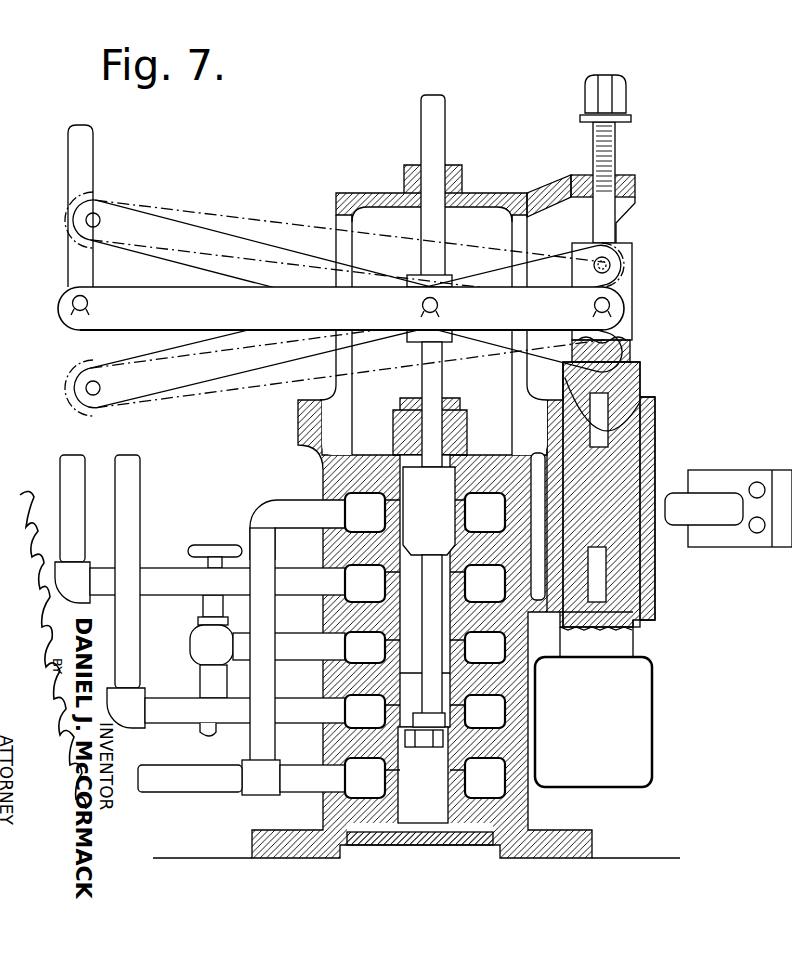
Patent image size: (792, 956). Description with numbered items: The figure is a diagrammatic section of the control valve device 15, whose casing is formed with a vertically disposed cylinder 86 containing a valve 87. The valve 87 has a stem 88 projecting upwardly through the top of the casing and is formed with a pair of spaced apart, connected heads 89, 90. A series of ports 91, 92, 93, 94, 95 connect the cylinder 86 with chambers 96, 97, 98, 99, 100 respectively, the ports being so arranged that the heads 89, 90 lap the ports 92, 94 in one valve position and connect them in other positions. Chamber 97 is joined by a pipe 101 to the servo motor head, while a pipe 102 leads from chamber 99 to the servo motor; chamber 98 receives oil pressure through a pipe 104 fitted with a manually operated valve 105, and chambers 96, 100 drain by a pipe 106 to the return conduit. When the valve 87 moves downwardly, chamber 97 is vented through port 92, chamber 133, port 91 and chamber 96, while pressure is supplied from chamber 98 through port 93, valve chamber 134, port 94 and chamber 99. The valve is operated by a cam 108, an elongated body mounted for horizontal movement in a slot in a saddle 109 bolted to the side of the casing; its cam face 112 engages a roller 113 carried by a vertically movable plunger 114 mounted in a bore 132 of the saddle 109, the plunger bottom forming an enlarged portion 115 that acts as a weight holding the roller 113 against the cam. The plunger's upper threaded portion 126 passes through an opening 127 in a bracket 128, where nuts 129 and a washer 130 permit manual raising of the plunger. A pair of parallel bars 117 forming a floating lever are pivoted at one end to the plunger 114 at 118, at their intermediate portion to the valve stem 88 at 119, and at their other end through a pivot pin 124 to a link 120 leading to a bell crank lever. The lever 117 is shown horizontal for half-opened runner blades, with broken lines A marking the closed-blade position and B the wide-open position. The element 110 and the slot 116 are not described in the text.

The control valve device 15 is at (530, 810).
The cylinder 86 is at (466, 681).
The valve 87 is at (410, 673).
The valve stem 88 is at (421, 131).
The head 89 is at (410, 573).
The head 90 is at (400, 728).
The port 91 is at (485, 512).
The port 92 is at (485, 583).
The port 93 is at (485, 647).
The port 94 is at (485, 711).
The port 95 is at (485, 778).
The chamber 96 is at (365, 512).
The chamber 97 is at (365, 583).
The chamber 98 is at (365, 647).
The chamber 99 is at (365, 711).
The chamber 100 is at (365, 778).
The pipe 101 is at (163, 578).
The pipe 102 is at (170, 700).
The pipe 104 is at (203, 735).
The manually operated valve 105 is at (215, 545).
The pipe 106 is at (163, 790).
The cam 108 is at (603, 538).
The saddle 109 is at (642, 618).
The bracket 110 is at (728, 508).
The cam face 112 is at (636, 437).
The roller 113 is at (604, 407).
The plunger 114 is at (618, 375).
The enlarged portion 115 is at (593, 722).
The slot 116 is at (604, 586).
The bars 117 is at (341, 308).
The pivotal connection 118 is at (610, 305).
The pivot 119 is at (430, 306).
The link 120 is at (90, 138).
The pivot pin 124 is at (77, 300).
The threaded portion 126 is at (594, 152).
The opening 127 is at (622, 188).
The bracket 128 is at (556, 190).
The nuts 129 is at (588, 88).
The washer 130 is at (583, 118).
The bore 132 is at (643, 455).
The chamber 133 is at (446, 485).
The valve chamber 134 is at (447, 673).
The floating lever position A is at (176, 218).
The floating lever position B is at (185, 388).